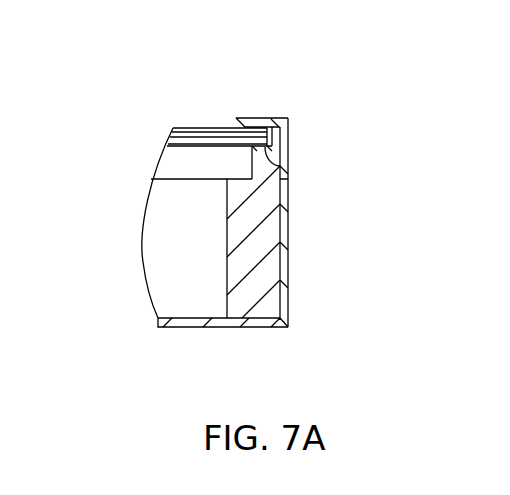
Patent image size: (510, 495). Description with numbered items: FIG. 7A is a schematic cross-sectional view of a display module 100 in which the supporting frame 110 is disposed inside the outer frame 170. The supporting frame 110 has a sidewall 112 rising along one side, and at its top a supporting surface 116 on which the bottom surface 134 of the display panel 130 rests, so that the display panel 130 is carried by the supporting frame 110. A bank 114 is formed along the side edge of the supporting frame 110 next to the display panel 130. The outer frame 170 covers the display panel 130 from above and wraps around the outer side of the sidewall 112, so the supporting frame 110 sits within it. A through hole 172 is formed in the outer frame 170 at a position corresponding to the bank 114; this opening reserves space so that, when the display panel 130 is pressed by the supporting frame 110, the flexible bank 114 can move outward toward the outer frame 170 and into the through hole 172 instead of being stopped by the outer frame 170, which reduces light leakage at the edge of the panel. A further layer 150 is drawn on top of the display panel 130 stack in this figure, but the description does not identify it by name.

The display module 100 is at (86, 26).
The supporting frame 110 is at (213, 235).
The sidewall 112 is at (268, 216).
The bank 114 is at (287, 127).
The supporting surface 116 is at (282, 165).
The display panel 130 is at (185, 128).
The bottom surface 134 is at (250, 146).
The cover film 150 is at (174, 128).
The outer frame 170 is at (285, 272).
The through hole 172 is at (292, 147).